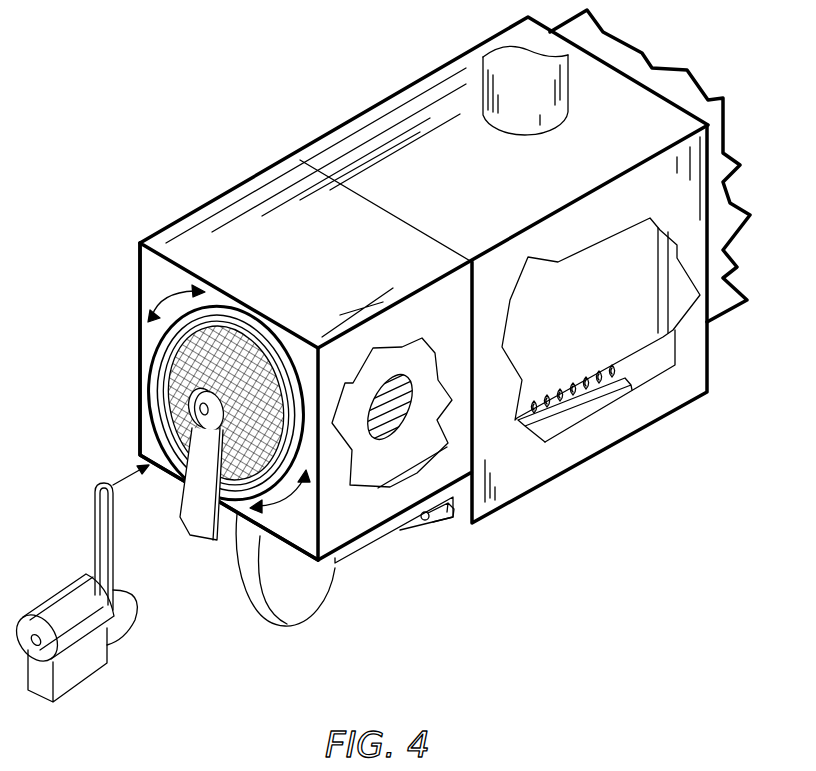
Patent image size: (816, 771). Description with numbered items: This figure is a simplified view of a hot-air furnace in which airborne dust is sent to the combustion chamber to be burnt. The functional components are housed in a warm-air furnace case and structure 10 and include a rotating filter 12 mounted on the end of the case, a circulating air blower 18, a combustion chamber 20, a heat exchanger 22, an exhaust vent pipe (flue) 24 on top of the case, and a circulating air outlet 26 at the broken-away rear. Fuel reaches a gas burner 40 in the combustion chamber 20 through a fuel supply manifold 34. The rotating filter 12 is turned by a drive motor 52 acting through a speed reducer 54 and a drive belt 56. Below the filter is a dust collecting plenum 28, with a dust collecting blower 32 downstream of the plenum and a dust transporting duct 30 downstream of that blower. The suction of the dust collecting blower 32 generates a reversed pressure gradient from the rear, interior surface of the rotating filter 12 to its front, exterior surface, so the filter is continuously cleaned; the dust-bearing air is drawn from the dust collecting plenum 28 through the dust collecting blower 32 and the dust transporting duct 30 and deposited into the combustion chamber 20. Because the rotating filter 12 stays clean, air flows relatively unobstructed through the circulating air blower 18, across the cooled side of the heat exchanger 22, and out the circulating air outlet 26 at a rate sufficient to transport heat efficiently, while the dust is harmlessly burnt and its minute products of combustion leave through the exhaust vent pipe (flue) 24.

The warm-air furnace case and structure 10 is at (352, 175).
The rotating filter 12 is at (200, 401).
The circulating air blower 18 is at (415, 375).
The combustion chamber 20 is at (648, 362).
The heat exchanger 22 is at (642, 275).
The exhaust vent pipe (flue) 24 is at (550, 76).
The circulating air outlet 26 is at (667, 83).
The dust collecting plenum 28 is at (205, 482).
The dust transporting duct 30 is at (363, 537).
The dust collecting blower 32 is at (293, 600).
The fuel supply manifold 34 is at (428, 520).
The gas burner 40 is at (592, 408).
The drive motor 52 is at (42, 645).
The speed reducer 54 is at (103, 640).
The drive belt 56 is at (113, 542).